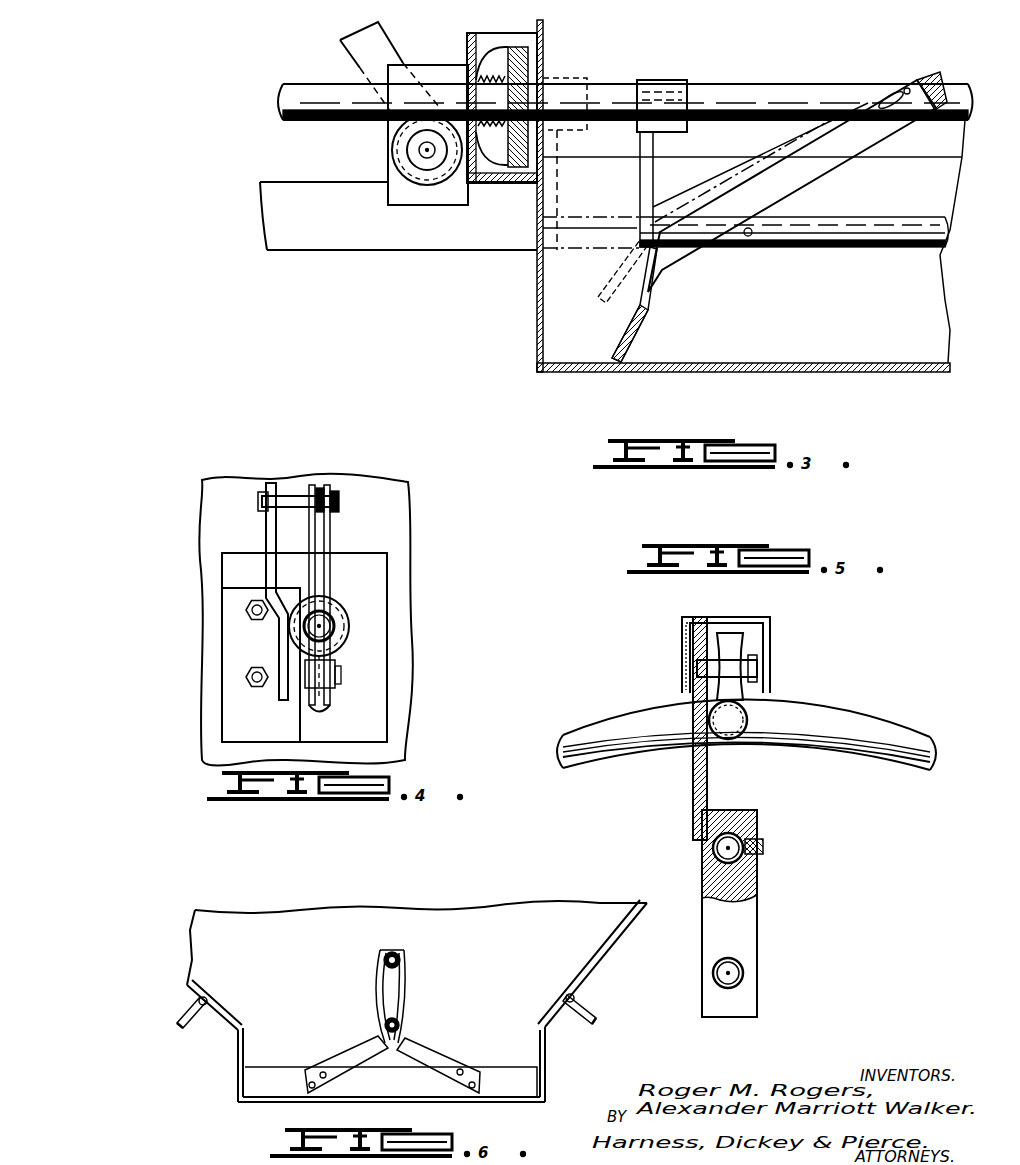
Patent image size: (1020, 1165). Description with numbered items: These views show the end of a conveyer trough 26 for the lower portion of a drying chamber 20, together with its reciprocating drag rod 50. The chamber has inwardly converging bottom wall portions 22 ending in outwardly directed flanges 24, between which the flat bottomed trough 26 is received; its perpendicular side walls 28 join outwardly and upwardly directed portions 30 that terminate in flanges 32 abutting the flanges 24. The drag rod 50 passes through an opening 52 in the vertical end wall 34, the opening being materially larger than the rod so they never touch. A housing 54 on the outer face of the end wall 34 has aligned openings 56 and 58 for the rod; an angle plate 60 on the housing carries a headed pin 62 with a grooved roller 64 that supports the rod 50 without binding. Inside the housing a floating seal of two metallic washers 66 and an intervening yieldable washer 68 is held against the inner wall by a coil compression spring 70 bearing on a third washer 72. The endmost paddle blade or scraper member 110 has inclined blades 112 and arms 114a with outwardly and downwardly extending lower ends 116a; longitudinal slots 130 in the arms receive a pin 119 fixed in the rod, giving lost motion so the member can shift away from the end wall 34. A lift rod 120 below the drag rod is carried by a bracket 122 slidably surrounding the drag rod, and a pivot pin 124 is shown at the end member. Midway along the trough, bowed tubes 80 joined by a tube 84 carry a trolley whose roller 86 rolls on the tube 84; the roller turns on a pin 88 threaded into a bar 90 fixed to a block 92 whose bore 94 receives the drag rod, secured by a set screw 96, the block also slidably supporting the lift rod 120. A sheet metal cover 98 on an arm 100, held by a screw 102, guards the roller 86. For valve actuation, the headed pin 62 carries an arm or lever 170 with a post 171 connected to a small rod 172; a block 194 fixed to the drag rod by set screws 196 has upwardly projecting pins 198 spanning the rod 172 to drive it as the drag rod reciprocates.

In FIG. 6, the drying chamber 20 is at (268, 910).
In FIG. 6, the bottom wall portions 22 is at (195, 985).
In FIG. 6, the flanges 24 is at (205, 1000).
In FIG. 3, the trough 26 is at (832, 372).
In FIG. 6, the trough 26 is at (380, 1103).
In FIG. 6, the side walls 28 is at (240, 1060).
In FIG. 6, the outwardly and upwardly directed portions 30 is at (240, 1020).
In FIG. 6, the flanges 32 is at (190, 1030).
In FIG. 3, the end walls 34 is at (536, 303).
In FIG. 3, the drag rod 50 is at (764, 84).
In FIG. 4, the drag rod 50 is at (332, 622).
In FIG. 5, the drag rod 50 is at (712, 852).
In FIG. 3, the openings 52 is at (548, 95).
In FIG. 3, the housing 54 is at (522, 185).
In FIG. 3, the opening 56 is at (548, 112).
In FIG. 3, the opening 58 is at (472, 84).
In FIG. 3, the angle plate 60 is at (432, 205).
In FIG. 4, the angle plate 60 is at (300, 740).
In FIG. 3, the headed pin 62 is at (412, 150).
In FIG. 4, the headed pin 62 is at (340, 678).
In FIG. 3, the roller 64 is at (405, 132).
In FIG. 4, the roller 64 is at (330, 708).
In FIG. 3, the metallic washers 66 is at (547, 62).
In FIG. 3, the yieldable washer 68 is at (548, 163).
In FIG. 3, the coil compression spring 70 is at (490, 50).
In FIG. 3, the third washer 72 is at (467, 48).
In FIG. 5, the upwardly bowed tubes 80 is at (860, 712).
In FIG. 5, the tube 84 is at (750, 720).
In FIG. 5, the roller 86 is at (743, 655).
In FIG. 5, the pin 88 is at (757, 668).
In FIG. 5, the strap or bar 90 is at (695, 657).
In FIG. 5, the block 92 is at (757, 815).
In FIG. 5, the bore 94 is at (735, 830).
In FIG. 5, the set screw 96 is at (765, 845).
In FIG. 5, the sheet metal cover 98 is at (682, 632).
In FIG. 5, the arm 100 is at (725, 617).
In FIG. 5, the screw 102 is at (695, 617).
In FIG. 3, the paddle blade or scraper member 110 is at (880, 150).
In FIG. 3, the paddle blades or scrapers 112 is at (640, 325).
In FIG. 6, the paddle blades or scrapers 112 is at (310, 1067).
In FIG. 3, the arms 114a is at (812, 172).
In FIG. 6, the lower ends 116a is at (448, 1062).
In FIG. 3, the pin 119 is at (905, 90).
In FIG. 6, the pin 119 is at (405, 962).
In FIG. 3, the lift rod 120 is at (838, 245).
In FIG. 5, the lift rod 120 is at (745, 975).
In FIG. 3, the bracket 122 is at (638, 192).
In FIG. 6, the pivot pin 124 is at (410, 1025).
In FIG. 3, the slots 130 is at (890, 95).
In FIG. 3, the arm or lever 170 is at (352, 45).
In FIG. 4, the arm or lever 170 is at (280, 646).
In FIG. 4, the post 171 is at (290, 492).
In FIG. 4, the rod 172 is at (322, 490).
In FIG. 4, the block 194 is at (330, 610).
In FIG. 4, the set screws 196 is at (318, 656).
In FIG. 4, the pins 198 is at (315, 538).